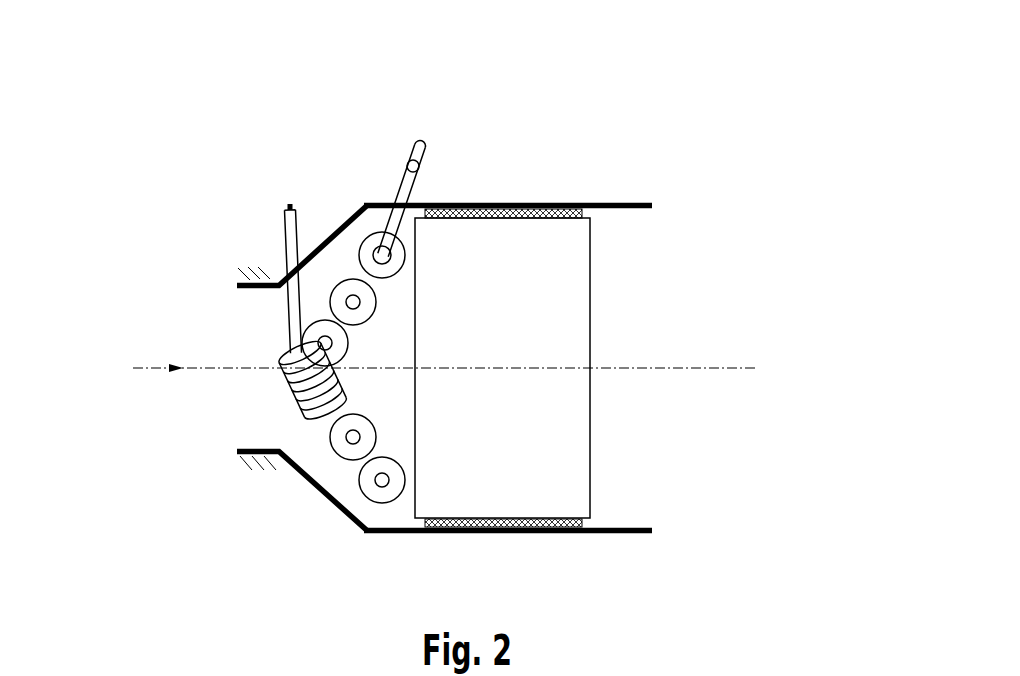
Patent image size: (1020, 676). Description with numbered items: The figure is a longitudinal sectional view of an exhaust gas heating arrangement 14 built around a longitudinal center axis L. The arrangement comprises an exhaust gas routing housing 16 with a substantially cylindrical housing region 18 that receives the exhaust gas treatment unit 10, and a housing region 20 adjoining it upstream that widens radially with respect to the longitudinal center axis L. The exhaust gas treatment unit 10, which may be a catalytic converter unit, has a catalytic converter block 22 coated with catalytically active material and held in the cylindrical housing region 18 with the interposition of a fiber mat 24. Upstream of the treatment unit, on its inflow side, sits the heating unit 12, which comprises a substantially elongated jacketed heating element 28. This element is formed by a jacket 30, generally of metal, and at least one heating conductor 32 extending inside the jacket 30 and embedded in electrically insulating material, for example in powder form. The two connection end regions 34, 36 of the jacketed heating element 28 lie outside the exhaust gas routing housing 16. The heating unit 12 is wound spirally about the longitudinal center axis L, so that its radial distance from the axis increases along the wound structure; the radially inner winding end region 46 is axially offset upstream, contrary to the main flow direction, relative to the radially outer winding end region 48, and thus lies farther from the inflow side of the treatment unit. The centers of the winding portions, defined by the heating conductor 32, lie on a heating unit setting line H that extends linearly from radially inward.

The exhaust gas treatment unit 10 is at (634, 301).
The heating unit 12 is at (246, 409).
The exhaust gas heating arrangement 14 is at (615, 137).
The exhaust gas routing housing 16 is at (380, 537).
The substantially cylindrical housing region 18 is at (410, 537).
The housing region 20 is at (318, 490).
The catalytic converter block 22 is at (490, 492).
The fiber mat 24 is at (547, 530).
The jacketed heating element 28 is at (282, 252).
The jacket 30 is at (412, 183).
The heating conductor 32 is at (288, 207).
The connection end region 34 is at (296, 222).
The connection end region 36 is at (400, 197).
The radially inner winding end region 46 is at (263, 363).
The radially outer winding end region 48 is at (410, 250).
The heating unit setting line H is at (143, 369).
The longitudinal center axis L is at (728, 370).